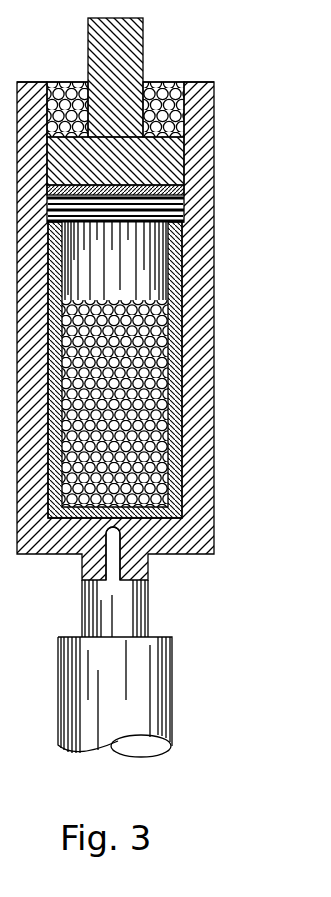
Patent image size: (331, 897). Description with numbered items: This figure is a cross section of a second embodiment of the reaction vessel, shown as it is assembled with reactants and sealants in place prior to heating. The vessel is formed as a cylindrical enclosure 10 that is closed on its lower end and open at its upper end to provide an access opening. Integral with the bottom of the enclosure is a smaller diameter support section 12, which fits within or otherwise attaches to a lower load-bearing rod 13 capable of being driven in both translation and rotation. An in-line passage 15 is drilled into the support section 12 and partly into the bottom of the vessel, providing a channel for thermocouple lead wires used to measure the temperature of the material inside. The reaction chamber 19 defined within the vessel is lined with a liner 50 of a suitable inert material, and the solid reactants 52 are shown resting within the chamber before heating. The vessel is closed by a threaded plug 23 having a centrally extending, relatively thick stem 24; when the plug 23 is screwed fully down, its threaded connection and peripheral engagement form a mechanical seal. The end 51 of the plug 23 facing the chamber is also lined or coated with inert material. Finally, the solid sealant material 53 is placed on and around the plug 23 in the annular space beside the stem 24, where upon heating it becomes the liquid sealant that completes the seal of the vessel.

The cylindrical enclosure 10 is at (205, 309).
The support section 12 is at (132, 604).
The lower load-bearing rod 13 is at (147, 666).
The in-line passage 15 is at (115, 576).
The reaction chamber 19 is at (147, 262).
The threaded plug 23 is at (168, 163).
The plug stem 24 is at (137, 53).
The liner 50 is at (177, 362).
The end of plug 51 is at (180, 188).
The solid reactants 52 is at (150, 425).
The solid sealant material 53 is at (177, 82).